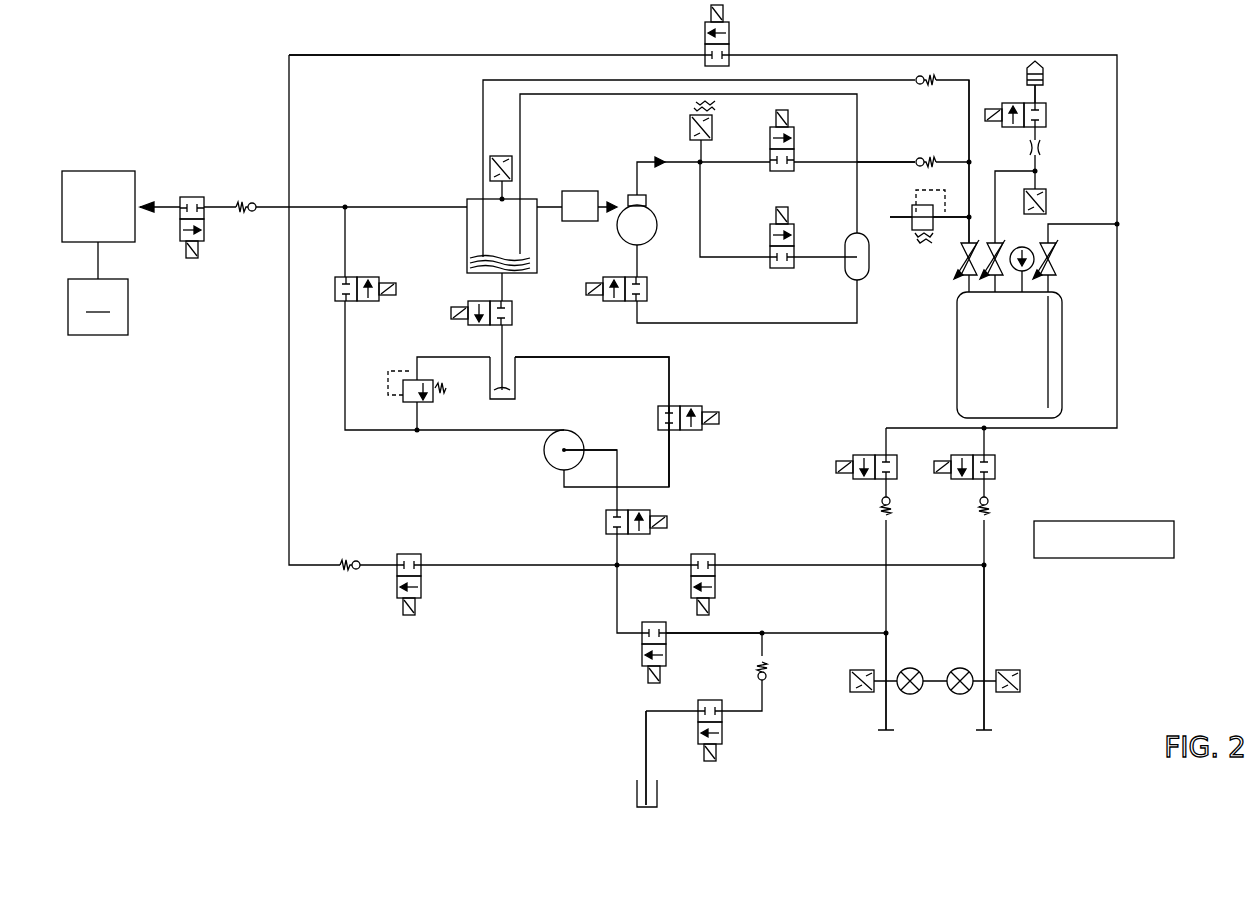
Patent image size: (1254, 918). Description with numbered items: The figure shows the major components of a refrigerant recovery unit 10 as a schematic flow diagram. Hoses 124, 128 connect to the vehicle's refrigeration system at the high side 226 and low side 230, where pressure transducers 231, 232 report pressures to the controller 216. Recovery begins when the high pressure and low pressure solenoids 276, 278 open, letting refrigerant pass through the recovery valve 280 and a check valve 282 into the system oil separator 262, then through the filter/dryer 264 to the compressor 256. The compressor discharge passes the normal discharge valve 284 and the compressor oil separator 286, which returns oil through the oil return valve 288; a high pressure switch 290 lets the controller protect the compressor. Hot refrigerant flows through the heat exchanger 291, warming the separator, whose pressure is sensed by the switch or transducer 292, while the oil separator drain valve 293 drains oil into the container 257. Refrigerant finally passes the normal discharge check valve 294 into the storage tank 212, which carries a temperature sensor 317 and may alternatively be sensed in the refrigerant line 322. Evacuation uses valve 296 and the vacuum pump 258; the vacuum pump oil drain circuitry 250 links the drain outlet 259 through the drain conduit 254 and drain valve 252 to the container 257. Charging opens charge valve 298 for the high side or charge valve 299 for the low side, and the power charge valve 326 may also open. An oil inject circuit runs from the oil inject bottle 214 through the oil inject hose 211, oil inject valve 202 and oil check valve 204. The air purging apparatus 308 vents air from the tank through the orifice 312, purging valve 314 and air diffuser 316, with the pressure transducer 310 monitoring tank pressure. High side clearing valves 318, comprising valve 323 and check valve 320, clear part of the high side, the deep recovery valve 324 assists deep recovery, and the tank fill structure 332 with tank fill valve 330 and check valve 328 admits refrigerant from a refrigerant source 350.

The refrigerant handling system 10 is at (229, 78).
The tank fill structure 332 is at (98, 170).
The refrigerant source 350 is at (98, 307).
The tank fill valve 330 is at (192, 258).
The check valve 328 is at (248, 200).
The deep recovery valve 324 is at (391, 277).
The power charge valve 326 is at (724, 15).
The switch or transducer 292 is at (502, 155).
The filter/dryer 264 is at (580, 190).
The high pressure switch 290 is at (689, 125).
The valve 323 is at (792, 128).
The normal discharge check valve 294 is at (922, 88).
The refrigerant line 322 is at (968, 117).
The check valve 320 is at (922, 157).
The air diffuser 316 is at (1046, 77).
The purging valve 314 is at (1048, 115).
The orifice 312 is at (1044, 150).
The pressure transducer 310 is at (1048, 200).
The air purging apparatus 308 is at (1143, 108).
The compressor 256 is at (658, 222).
The system oil separator 262 is at (538, 233).
The heat exchanger 291 is at (525, 263).
The oil return valve 288 is at (648, 288).
The normal discharge valve 284 is at (781, 270).
The compressor oil separator 286 is at (870, 262).
The high side clearing valves 318 is at (890, 181).
The storage tank 212 is at (956, 342).
The temperature sensor 317 is at (1065, 326).
The oil separator drain valve 293 is at (455, 318).
The vacuum pump oil drain conduit 254 is at (574, 356).
The container 257 is at (517, 390).
The vacuum pump oil drain valve 252 is at (716, 406).
The vacuum pump oil drain circuitry 250 is at (754, 388).
The vacuum pump 258 is at (580, 435).
The vacuum pump oil drain outlet 259 is at (556, 465).
The charge valve 298 is at (835, 467).
The charge valve 299 is at (996, 466).
The check valve 282 is at (352, 560).
The recovery valve 280 is at (409, 553).
The valve 296 is at (605, 520).
The low pressure solenoid 278 is at (690, 585).
The controller 216 is at (1176, 537).
The high pressure solenoid 276 is at (641, 653).
The oil check valve 204 is at (755, 672).
The oil inject hose 211 is at (765, 648).
The pressure transducer 231 is at (849, 681).
The pressure transducer 232 is at (1013, 668).
The hose 124 is at (888, 702).
The hose 128 is at (986, 702).
The high side connection 226 is at (884, 728).
The low side connection 230 is at (986, 728).
The oil inject bottle 214 is at (636, 793).
The oil inject valve 202 is at (711, 764).